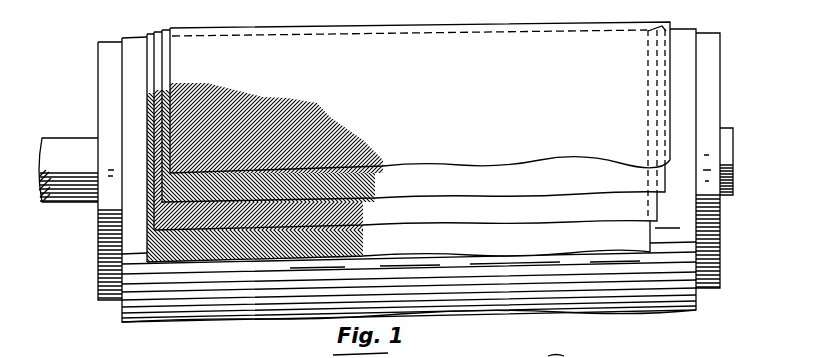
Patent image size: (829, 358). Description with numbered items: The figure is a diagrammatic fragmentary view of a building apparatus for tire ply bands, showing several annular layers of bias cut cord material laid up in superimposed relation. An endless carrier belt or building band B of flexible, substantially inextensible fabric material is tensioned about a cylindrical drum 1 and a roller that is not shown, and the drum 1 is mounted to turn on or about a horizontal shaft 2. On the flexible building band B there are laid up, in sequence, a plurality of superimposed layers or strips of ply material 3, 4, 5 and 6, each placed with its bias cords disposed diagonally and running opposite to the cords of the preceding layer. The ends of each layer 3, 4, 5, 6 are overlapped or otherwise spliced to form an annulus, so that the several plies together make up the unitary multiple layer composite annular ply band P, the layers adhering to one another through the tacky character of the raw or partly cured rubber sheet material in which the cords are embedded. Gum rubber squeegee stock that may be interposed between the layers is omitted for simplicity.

The cylindrical drum 1 is at (102, 70).
The horizontal shaft 2 is at (73, 197).
The layer of ply material 3 is at (339, 252).
The layer of ply material 4 is at (367, 217).
The layer of ply material 5 is at (403, 189).
The layer of ply material 6 is at (423, 160).
The composite annular ply band P is at (420, 97).
The building band B is at (160, 312).